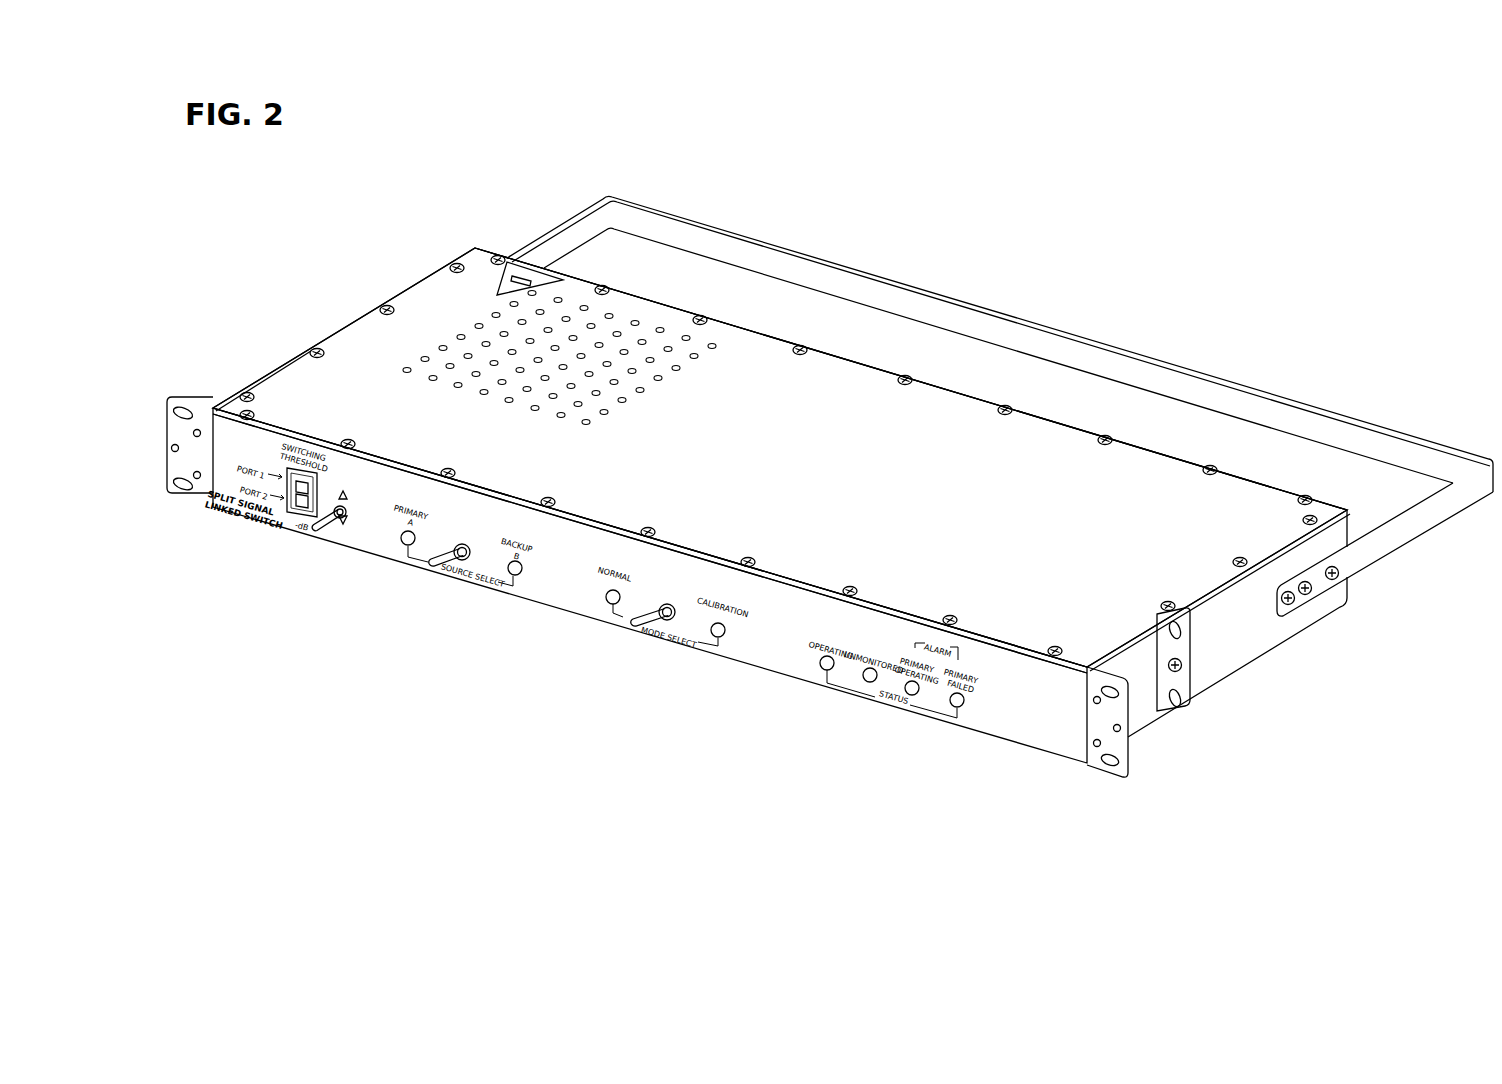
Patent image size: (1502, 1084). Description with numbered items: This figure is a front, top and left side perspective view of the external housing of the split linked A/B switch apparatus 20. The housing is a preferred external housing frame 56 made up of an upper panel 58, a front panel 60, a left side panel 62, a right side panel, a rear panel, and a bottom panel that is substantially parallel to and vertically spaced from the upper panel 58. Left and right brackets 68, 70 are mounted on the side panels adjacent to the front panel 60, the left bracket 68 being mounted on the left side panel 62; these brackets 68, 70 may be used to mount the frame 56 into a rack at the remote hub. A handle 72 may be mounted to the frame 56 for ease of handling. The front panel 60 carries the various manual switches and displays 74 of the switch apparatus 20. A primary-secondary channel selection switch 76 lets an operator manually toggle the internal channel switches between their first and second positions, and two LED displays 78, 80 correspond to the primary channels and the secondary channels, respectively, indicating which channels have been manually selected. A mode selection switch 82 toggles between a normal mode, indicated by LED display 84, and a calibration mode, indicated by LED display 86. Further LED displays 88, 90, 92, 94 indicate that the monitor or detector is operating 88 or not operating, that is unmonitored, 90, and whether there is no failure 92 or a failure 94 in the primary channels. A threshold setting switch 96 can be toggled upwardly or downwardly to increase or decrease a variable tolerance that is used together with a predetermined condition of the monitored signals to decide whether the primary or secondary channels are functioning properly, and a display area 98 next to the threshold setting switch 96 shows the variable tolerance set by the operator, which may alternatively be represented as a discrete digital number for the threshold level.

The switch apparatus 20 is at (1323, 337).
The external housing frame 56 is at (418, 297).
The upper panel 58 is at (1045, 428).
The front panel 60 is at (795, 610).
The left side panel 62 is at (1243, 648).
The left bracket 68 is at (1148, 717).
The right bracket 70 is at (180, 468).
The handle 72 is at (1070, 345).
The manual switches and displays 74 is at (1013, 808).
The primary-secondary channel selection switch 76 is at (440, 565).
The LED display 78 is at (407, 546).
The LED display 80 is at (518, 576).
The mode selection switch 82 is at (635, 622).
The LED display 84 is at (612, 604).
The LED display 86 is at (718, 637).
The LED display 88 is at (827, 670).
The LED display 90 is at (870, 682).
The LED display 92 is at (912, 695).
The LED display 94 is at (955, 707).
The threshold setting switch 96 is at (315, 527).
The display area 98 is at (296, 508).